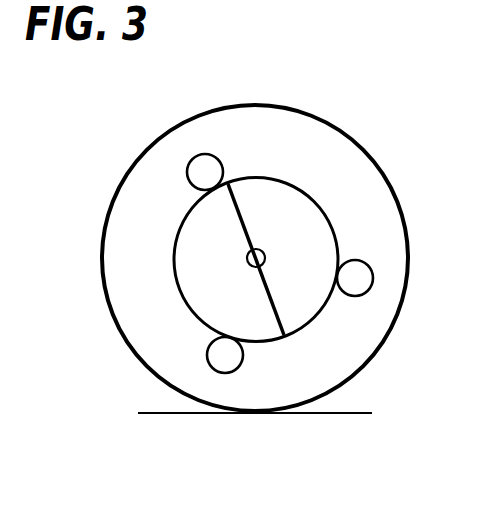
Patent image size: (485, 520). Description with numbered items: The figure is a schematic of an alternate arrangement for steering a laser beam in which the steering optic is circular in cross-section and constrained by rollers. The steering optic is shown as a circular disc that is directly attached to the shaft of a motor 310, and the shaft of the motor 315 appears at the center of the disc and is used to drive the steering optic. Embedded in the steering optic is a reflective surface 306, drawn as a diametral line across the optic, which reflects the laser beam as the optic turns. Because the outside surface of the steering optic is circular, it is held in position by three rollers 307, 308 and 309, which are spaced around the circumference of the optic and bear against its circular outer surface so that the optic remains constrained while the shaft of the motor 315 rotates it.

The reflective surface 306 is at (264, 296).
The roller 307 is at (360, 302).
The roller 308 is at (177, 145).
The roller 309 is at (220, 378).
The motor 310 is at (345, 133).
The shaft of the motor 315 is at (242, 256).